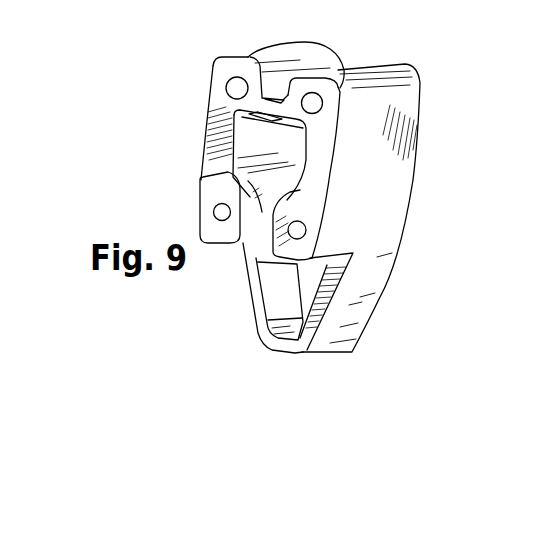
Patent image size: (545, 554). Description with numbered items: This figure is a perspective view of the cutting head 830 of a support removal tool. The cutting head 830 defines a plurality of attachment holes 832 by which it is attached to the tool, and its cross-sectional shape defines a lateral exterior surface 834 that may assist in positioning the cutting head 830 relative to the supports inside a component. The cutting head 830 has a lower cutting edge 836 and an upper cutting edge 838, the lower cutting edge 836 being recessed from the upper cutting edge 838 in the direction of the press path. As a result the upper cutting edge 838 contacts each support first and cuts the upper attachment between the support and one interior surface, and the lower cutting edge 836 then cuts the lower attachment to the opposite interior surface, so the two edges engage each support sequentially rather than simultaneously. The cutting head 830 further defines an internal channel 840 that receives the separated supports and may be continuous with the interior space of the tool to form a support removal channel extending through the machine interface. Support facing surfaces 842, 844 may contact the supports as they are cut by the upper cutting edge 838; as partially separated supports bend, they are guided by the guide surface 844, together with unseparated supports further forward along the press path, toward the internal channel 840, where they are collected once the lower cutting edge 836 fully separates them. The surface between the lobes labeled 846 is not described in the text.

The cutting head 830 is at (232, 44).
The attachment holes 832 is at (313, 104).
The lateral exterior surface 834 is at (402, 132).
The lower cutting edge 836 is at (288, 331).
The upper cutting edge 838 is at (264, 102).
The internal channel 840 is at (318, 287).
The support facing surface 842 is at (221, 211).
The guide surface 844 is at (295, 206).
The surface between lobes 846 is at (262, 210).